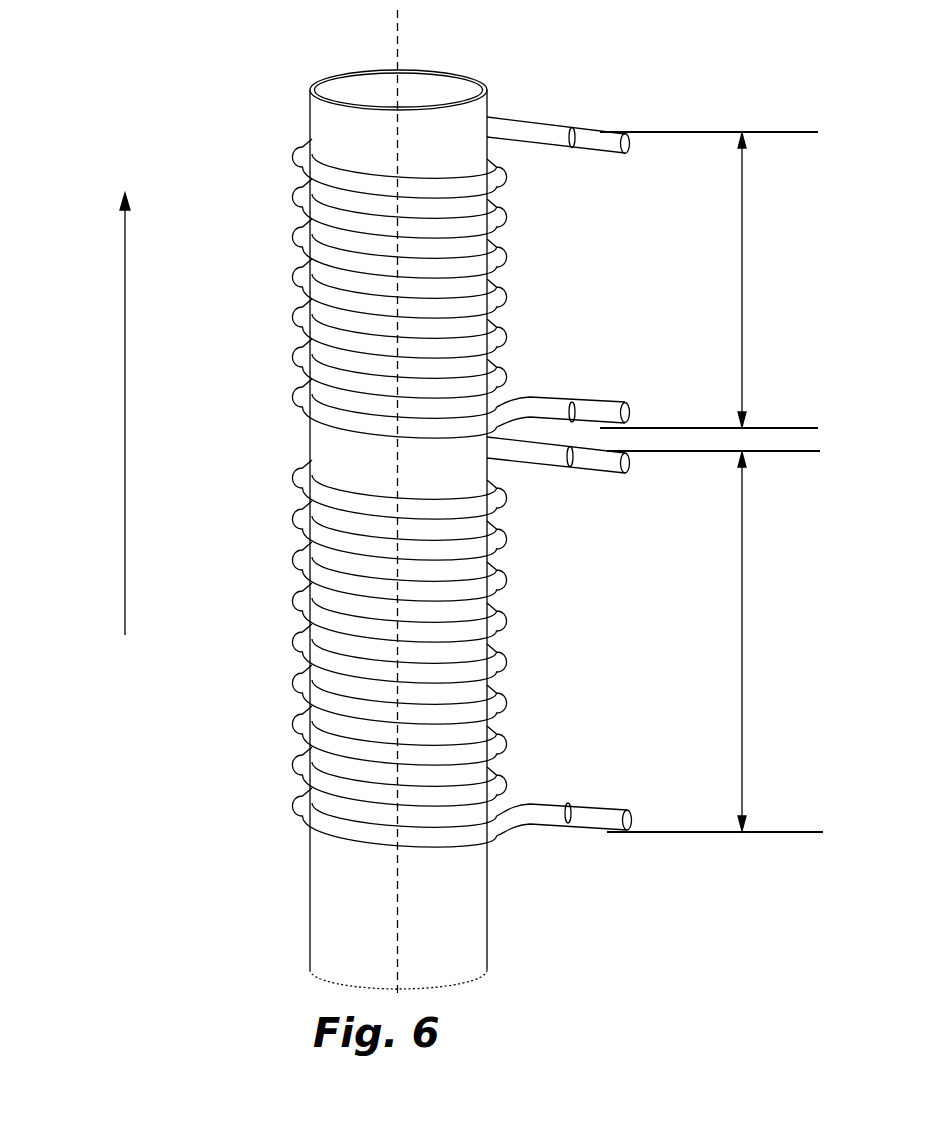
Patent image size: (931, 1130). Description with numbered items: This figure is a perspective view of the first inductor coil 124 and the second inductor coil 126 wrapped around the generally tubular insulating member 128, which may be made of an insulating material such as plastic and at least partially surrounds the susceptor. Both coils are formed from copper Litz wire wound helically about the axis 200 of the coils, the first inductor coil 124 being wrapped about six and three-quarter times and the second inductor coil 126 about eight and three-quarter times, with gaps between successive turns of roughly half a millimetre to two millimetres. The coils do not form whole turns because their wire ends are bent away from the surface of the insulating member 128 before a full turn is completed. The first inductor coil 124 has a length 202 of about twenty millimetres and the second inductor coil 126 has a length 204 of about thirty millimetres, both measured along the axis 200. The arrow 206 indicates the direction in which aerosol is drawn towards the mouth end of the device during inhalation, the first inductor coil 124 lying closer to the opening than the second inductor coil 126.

The axis 200 is at (396, 40).
The first inductor coil 124 is at (504, 289).
The second inductor coil 126 is at (504, 654).
The insulating member 128 is at (312, 443).
The length of the first inductor coil 202 is at (742, 270).
The length of the second inductor coil 204 is at (742, 662).
The arrow indicating direction of aerosol flow 206 is at (125, 452).